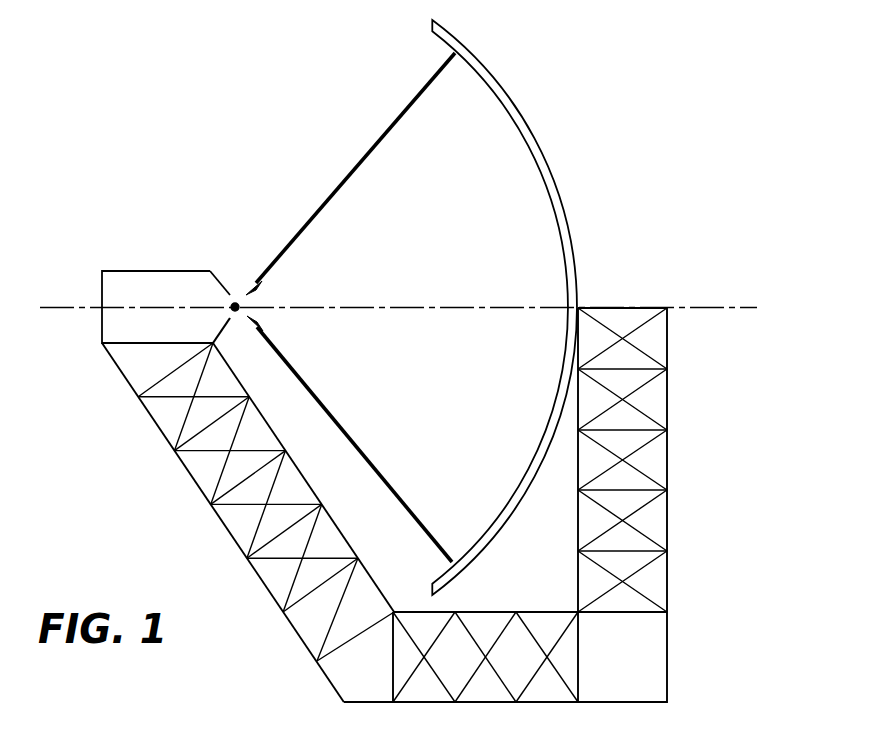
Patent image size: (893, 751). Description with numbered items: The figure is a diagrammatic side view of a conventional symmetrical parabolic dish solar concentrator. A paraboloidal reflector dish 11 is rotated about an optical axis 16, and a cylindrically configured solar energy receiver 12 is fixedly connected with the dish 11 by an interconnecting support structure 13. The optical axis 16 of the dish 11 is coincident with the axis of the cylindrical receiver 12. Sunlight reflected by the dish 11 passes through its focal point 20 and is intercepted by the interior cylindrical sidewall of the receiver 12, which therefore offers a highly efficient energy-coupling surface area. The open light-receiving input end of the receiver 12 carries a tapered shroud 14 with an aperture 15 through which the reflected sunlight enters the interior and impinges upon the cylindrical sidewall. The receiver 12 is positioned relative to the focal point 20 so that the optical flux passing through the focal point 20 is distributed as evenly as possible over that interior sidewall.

The paraboloidal reflector dish 11 is at (570, 237).
The solar energy receiver 12 is at (140, 270).
The interconnecting support structure 13 is at (667, 507).
The tapered shroud 14 is at (230, 292).
The aperture 15 is at (232, 318).
The optical axis 16 is at (717, 306).
The focal point 20 is at (247, 296).